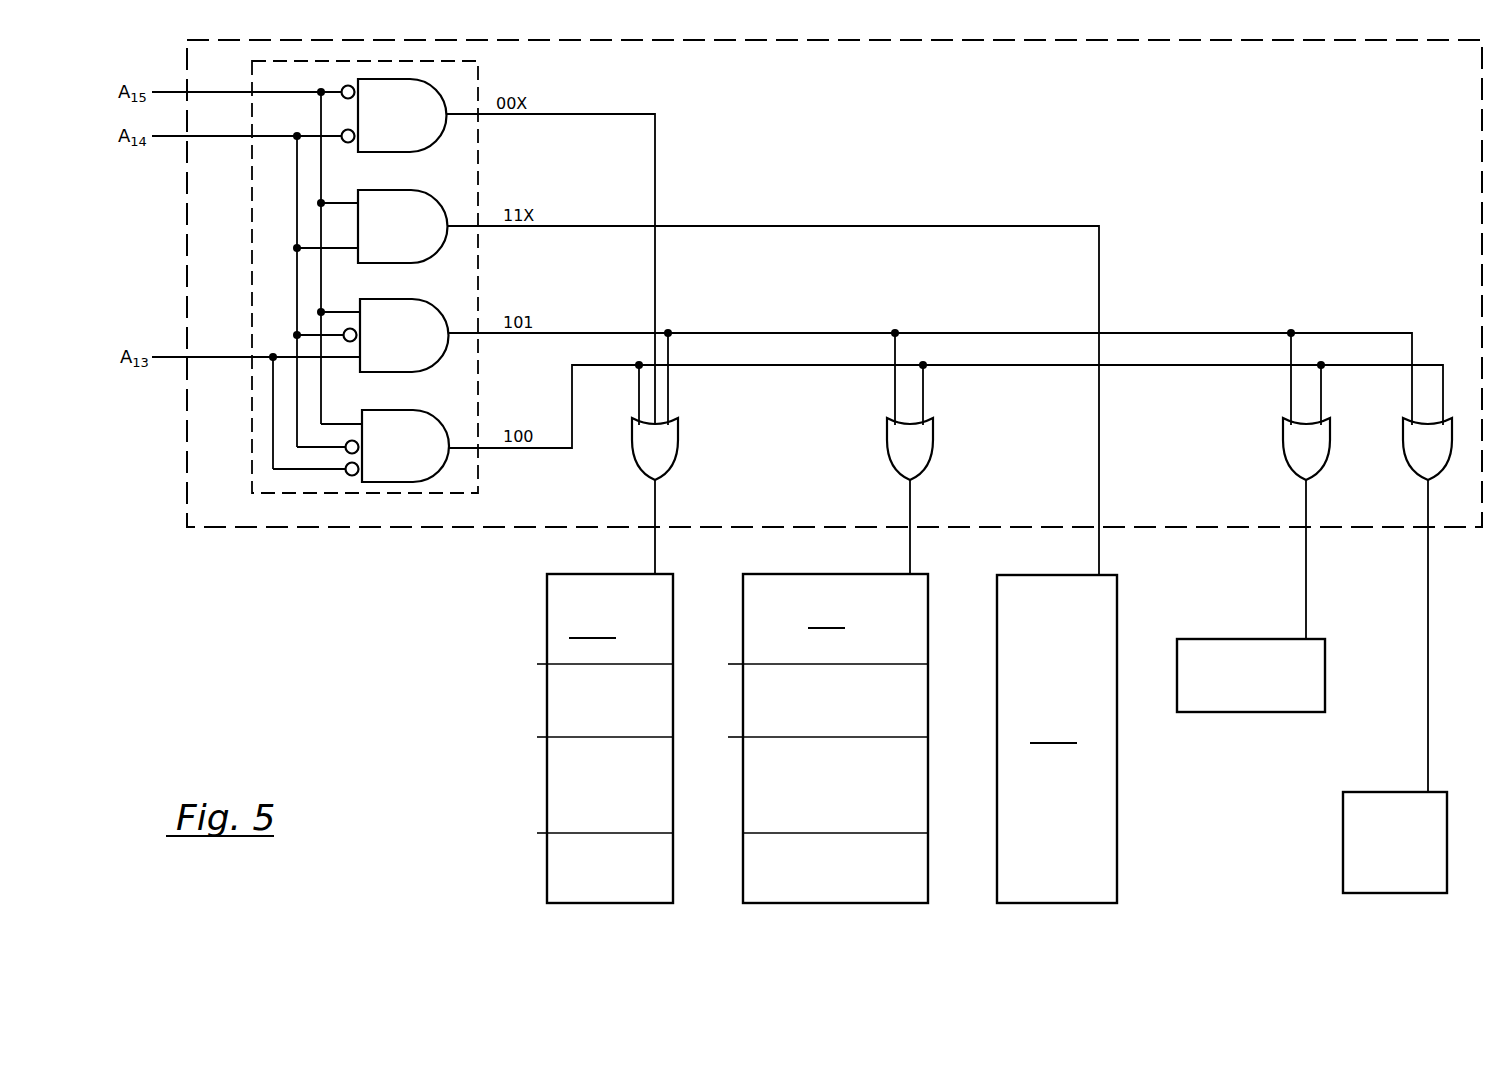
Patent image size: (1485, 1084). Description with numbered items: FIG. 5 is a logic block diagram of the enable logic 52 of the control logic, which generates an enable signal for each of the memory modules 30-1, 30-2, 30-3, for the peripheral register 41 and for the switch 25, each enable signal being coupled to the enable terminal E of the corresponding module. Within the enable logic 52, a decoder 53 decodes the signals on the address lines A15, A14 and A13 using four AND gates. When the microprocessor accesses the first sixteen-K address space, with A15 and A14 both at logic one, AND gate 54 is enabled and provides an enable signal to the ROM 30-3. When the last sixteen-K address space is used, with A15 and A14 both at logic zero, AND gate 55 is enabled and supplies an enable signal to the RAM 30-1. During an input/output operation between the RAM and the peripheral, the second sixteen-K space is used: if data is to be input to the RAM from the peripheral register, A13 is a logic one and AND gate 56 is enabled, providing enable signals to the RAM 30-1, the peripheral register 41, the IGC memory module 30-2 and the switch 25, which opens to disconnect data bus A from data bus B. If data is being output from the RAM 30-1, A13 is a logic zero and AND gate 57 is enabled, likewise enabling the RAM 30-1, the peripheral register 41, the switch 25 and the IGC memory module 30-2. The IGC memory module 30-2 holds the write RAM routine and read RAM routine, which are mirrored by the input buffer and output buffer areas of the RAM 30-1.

The enable logic 52 is at (228, 69).
The decoder 53 is at (480, 66).
The AND gate 55 is at (432, 84).
The AND gate 54 is at (430, 181).
The AND gate 56 is at (430, 297).
The AND gate 57 is at (430, 409).
The RAM memory module 30-1 is at (642, 904).
The IGC memory module 30-2 is at (873, 904).
The ROM 30-3 is at (1080, 904).
The peripheral register 41 is at (1253, 713).
The switch 25 is at (1398, 894).